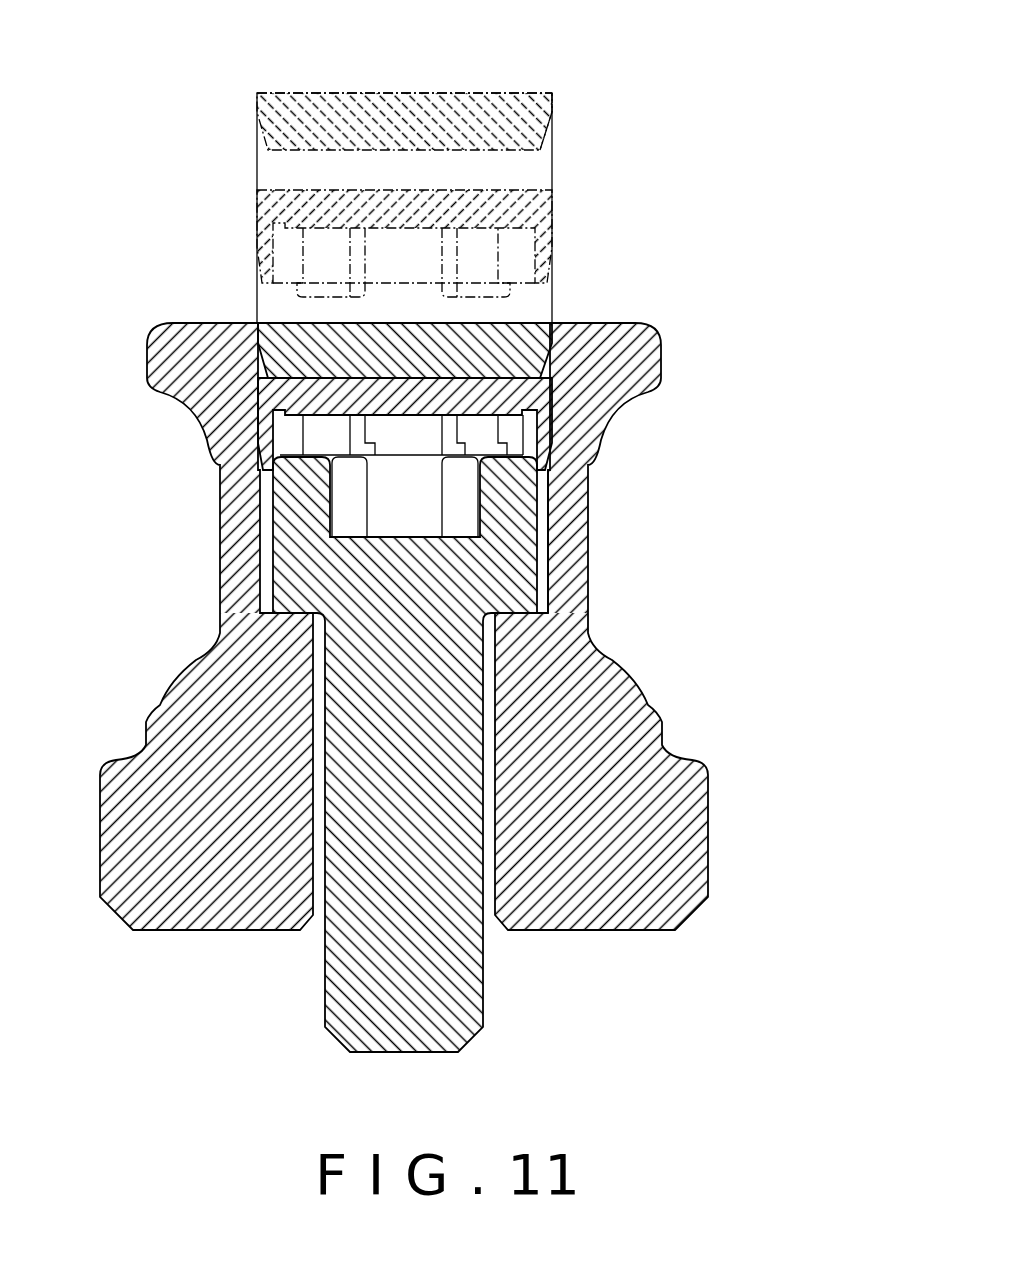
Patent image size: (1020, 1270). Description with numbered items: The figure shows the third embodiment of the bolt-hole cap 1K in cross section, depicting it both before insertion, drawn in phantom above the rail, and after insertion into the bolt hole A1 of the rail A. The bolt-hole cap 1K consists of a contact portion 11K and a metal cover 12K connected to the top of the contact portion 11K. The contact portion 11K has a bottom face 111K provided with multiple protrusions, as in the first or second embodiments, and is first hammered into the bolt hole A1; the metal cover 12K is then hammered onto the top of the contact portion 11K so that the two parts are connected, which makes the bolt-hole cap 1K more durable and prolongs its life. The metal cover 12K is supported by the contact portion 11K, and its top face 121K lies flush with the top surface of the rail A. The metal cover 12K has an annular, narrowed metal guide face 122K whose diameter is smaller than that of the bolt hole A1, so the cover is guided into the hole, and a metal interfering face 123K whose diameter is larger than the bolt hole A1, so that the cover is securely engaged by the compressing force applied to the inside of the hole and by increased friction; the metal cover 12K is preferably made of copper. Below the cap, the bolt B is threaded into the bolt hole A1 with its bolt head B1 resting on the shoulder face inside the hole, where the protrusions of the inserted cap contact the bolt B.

The bolt-hole cap 1K is at (436, 236).
The contact portion 11K is at (399, 330).
The metal cover 12K is at (496, 190).
The top face 121K is at (477, 93).
The metal guide face 122K is at (547, 138).
The metal interfering face 123K is at (553, 107).
The bottom face 111K is at (365, 232).
The rail A is at (605, 631).
The bolt hole A1 is at (540, 570).
The bolt B is at (367, 720).
The bolt head B1 is at (303, 582).